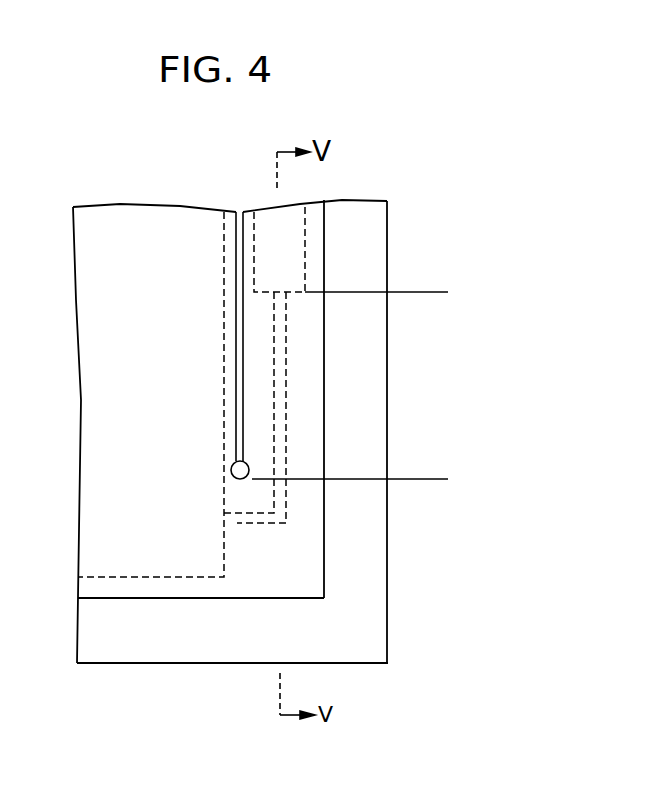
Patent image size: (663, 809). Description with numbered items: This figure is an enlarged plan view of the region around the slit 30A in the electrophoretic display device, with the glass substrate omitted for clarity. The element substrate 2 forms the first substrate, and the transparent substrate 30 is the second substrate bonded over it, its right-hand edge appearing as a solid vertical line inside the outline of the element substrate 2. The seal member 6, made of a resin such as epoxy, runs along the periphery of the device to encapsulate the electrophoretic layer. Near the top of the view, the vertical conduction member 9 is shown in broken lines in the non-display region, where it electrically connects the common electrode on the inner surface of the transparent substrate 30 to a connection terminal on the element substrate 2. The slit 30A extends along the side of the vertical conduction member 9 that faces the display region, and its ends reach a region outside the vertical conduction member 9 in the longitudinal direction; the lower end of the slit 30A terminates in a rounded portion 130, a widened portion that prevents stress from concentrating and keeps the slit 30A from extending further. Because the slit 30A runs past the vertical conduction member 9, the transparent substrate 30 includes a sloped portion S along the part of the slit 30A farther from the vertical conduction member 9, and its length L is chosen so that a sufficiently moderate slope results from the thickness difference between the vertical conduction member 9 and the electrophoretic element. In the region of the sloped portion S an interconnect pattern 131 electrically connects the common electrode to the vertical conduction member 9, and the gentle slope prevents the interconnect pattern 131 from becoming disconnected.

The element substrate 2 is at (367, 565).
The seal member 6 is at (382, 620).
The vertical conduction member 9 is at (305, 227).
The transparent substrate 30 is at (312, 513).
The slit 30A is at (243, 278).
The rounded portion 130 is at (138, 577).
The interconnect pattern 131 is at (237, 523).
The sloped portion S is at (298, 398).
The length of the sloped portion L is at (413, 300).